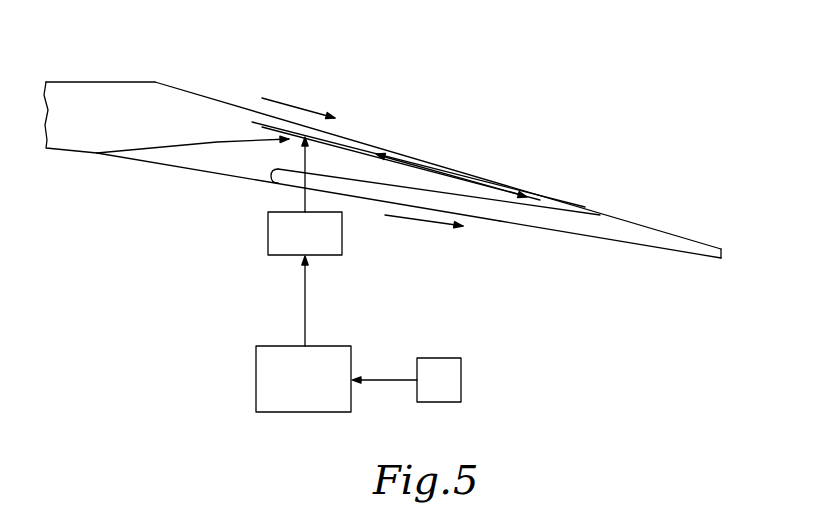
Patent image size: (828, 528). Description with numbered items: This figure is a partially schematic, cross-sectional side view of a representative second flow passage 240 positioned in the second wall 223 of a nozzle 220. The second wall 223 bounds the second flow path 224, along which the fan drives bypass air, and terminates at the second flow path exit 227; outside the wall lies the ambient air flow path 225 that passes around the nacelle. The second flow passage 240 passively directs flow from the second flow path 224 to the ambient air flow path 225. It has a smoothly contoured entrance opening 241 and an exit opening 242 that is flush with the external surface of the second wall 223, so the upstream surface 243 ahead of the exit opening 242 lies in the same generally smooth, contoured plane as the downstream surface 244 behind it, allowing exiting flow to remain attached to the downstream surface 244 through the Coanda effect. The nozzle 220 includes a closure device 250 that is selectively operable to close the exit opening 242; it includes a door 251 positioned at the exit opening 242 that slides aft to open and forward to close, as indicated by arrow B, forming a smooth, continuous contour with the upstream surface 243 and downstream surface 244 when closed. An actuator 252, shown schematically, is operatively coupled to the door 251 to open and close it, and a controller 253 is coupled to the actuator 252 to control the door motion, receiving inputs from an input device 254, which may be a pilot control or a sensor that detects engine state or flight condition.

The nozzle 220 is at (417, 102).
The second wall 223 is at (205, 110).
The second flow path 224 is at (420, 222).
The ambient air flow path 225 is at (297, 107).
The second flow path exit 227 is at (718, 266).
The second flow passage 240 is at (220, 153).
The entrance opening 241 is at (167, 167).
The exit opening 242 is at (570, 200).
The upstream surface 243 is at (440, 168).
The downstream surface 244 is at (672, 233).
The closure device 250 is at (286, 141).
The door 251 is at (273, 120).
The actuator 252 is at (282, 255).
The controller 253 is at (285, 346).
The input device 254 is at (437, 358).
The arrow B is at (405, 157).